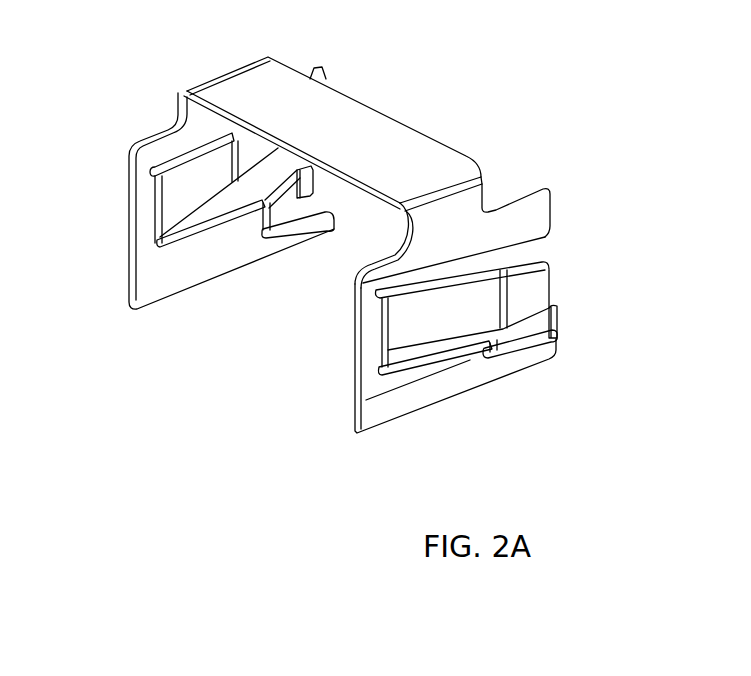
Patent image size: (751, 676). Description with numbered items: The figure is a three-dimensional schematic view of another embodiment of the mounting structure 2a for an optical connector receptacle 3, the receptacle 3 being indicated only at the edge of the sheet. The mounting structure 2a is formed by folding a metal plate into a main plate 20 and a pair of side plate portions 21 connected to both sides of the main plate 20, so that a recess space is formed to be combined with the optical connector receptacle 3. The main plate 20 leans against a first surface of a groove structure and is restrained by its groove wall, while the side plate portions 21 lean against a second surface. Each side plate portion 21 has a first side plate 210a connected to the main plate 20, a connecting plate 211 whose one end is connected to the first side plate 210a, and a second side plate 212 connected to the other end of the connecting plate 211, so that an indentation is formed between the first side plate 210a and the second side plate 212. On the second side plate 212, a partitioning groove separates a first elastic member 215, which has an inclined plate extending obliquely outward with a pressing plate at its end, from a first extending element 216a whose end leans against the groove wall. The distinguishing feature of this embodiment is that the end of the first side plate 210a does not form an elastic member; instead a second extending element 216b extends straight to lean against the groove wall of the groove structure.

The mounting structure 2a is at (170, 128).
The main plate 20 is at (390, 130).
The side plate portion 21 is at (360, 418).
The first side plate 210a is at (393, 266).
The connecting plate 211 is at (372, 338).
The second side plate 212 is at (382, 388).
The first elastic member 215 is at (558, 318).
The first extending element 216a is at (548, 343).
The second extending element 216b is at (540, 212).
The optical connector receptacle 3 is at (750, 481).